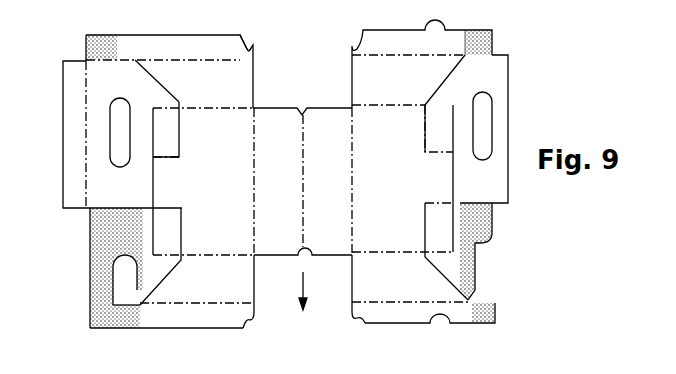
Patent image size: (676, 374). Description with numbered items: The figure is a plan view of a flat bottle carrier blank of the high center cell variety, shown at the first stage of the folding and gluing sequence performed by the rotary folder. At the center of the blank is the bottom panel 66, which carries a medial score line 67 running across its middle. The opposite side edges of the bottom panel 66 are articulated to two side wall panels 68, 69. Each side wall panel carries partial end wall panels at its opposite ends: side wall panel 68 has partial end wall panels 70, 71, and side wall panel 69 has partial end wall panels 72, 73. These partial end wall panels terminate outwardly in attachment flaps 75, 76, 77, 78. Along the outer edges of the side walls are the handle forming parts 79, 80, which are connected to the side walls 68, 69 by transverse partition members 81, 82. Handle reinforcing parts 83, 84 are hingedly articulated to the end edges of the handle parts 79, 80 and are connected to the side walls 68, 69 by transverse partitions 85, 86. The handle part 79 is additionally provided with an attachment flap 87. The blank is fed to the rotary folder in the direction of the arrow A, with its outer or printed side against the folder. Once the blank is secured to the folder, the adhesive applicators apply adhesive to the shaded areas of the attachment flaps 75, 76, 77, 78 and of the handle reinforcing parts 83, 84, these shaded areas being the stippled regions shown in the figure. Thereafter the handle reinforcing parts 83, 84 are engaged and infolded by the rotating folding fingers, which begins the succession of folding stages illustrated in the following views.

The bottom panel 66 is at (333, 164).
The medial score line 67 is at (305, 200).
The side wall panel 68 is at (203, 181).
The side wall panel 69 is at (402, 181).
The partial end wall panel 70 is at (169, 71).
The partial end wall panel 71 is at (197, 285).
The partial end wall panel 72 is at (422, 64).
The partial end wall panel 73 is at (410, 284).
The attachment flap 75 is at (256, 49).
The attachment flap 76 is at (195, 333).
The attachment flap 77 is at (462, 45).
The attachment flap 78 is at (240, 335).
The handle forming part 79 is at (108, 121).
The handle forming part 80 is at (484, 129).
The transverse partition member 81 is at (172, 133).
The transverse partition member 82 is at (427, 122).
The handle reinforcing part 83 is at (102, 235).
The handle reinforcing part 84 is at (492, 228).
The transverse partition 85 is at (175, 228).
The transverse partition 86 is at (426, 221).
The attachment flap 87 is at (73, 73).
The arrow A is at (309, 296).